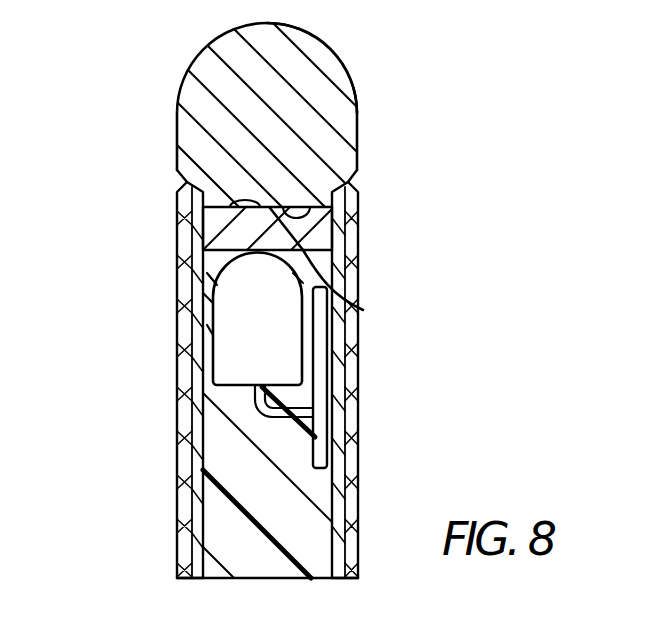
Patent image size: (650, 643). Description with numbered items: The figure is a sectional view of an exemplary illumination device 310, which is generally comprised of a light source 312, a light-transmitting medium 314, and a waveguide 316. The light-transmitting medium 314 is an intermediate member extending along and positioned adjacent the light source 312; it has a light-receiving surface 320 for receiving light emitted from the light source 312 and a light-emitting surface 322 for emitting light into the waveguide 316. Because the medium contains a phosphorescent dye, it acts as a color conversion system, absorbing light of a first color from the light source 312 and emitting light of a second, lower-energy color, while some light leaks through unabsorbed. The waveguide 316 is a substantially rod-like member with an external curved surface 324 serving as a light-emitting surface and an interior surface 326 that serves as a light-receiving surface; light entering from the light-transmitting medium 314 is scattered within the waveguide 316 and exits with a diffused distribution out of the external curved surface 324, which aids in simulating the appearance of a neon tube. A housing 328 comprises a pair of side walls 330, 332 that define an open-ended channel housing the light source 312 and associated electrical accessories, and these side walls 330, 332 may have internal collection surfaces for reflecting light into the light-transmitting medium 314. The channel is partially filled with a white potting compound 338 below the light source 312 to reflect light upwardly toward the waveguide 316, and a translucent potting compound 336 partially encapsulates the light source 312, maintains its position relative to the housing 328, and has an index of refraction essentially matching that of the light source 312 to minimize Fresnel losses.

The illumination device 310 is at (143, 63).
The light source 312 is at (221, 342).
The light-transmitting medium 314 is at (210, 224).
The waveguide 316 is at (185, 136).
The light-receiving surface 320 is at (335, 273).
The light-emitting surface 322 is at (363, 310).
The external curved surface 324 is at (345, 63).
The interior surface 326 is at (280, 245).
The housing 328 is at (180, 253).
The side wall 330 is at (178, 510).
The side wall 332 is at (356, 418).
The translucent potting compound 336 is at (314, 288).
The white potting compound 338 is at (260, 565).